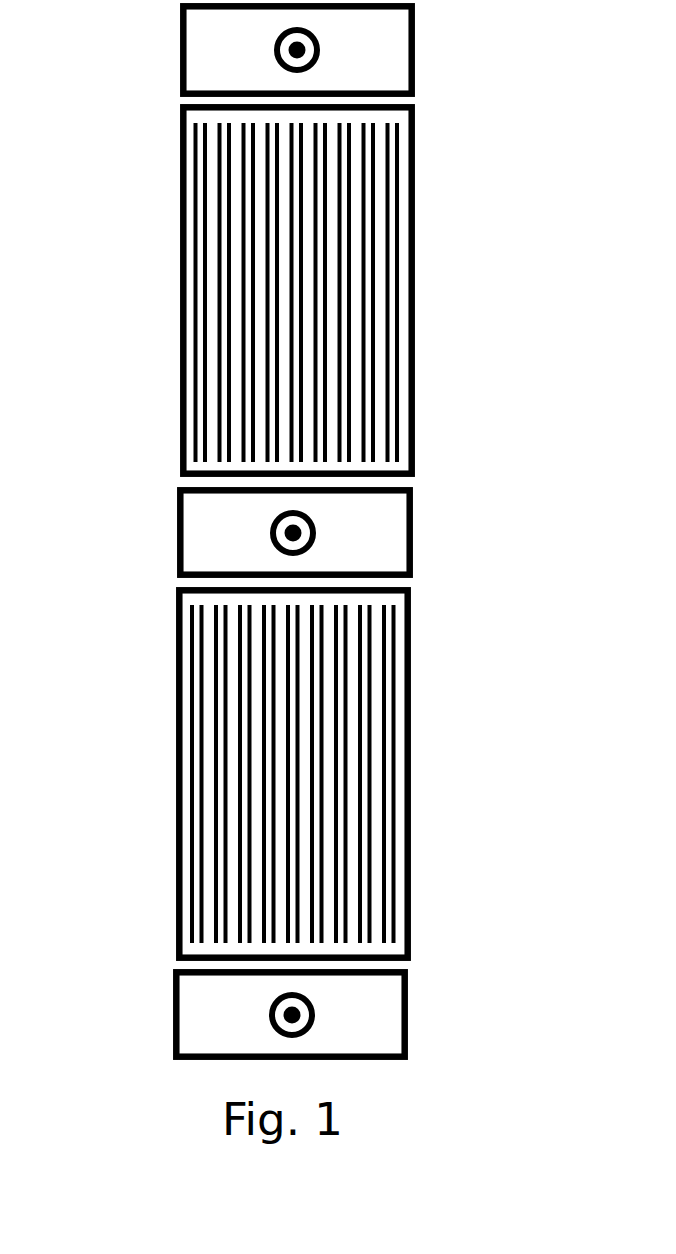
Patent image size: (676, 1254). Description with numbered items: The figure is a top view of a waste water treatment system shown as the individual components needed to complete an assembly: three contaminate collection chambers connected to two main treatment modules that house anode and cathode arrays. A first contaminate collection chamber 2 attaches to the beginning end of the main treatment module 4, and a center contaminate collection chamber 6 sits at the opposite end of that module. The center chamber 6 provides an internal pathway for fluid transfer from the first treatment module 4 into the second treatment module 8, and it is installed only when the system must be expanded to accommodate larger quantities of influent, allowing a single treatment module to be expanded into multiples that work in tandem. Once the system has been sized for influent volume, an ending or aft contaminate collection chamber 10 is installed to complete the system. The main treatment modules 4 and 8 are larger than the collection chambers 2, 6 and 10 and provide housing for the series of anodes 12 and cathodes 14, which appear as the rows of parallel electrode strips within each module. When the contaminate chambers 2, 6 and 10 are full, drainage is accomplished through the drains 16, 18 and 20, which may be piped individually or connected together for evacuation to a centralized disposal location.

The first contaminate collection chamber 2 is at (415, 51).
The main treatment module 4 is at (415, 268).
The center contaminate collection chamber 6 is at (413, 533).
The second treatment module 8 is at (411, 775).
The aft contaminate collection chamber 10 is at (408, 1016).
The anodes 12 is at (223, 340).
The cathodes 14 is at (223, 859).
The drain 16 is at (274, 50).
The drain 18 is at (270, 533).
The drain 20 is at (269, 1015).